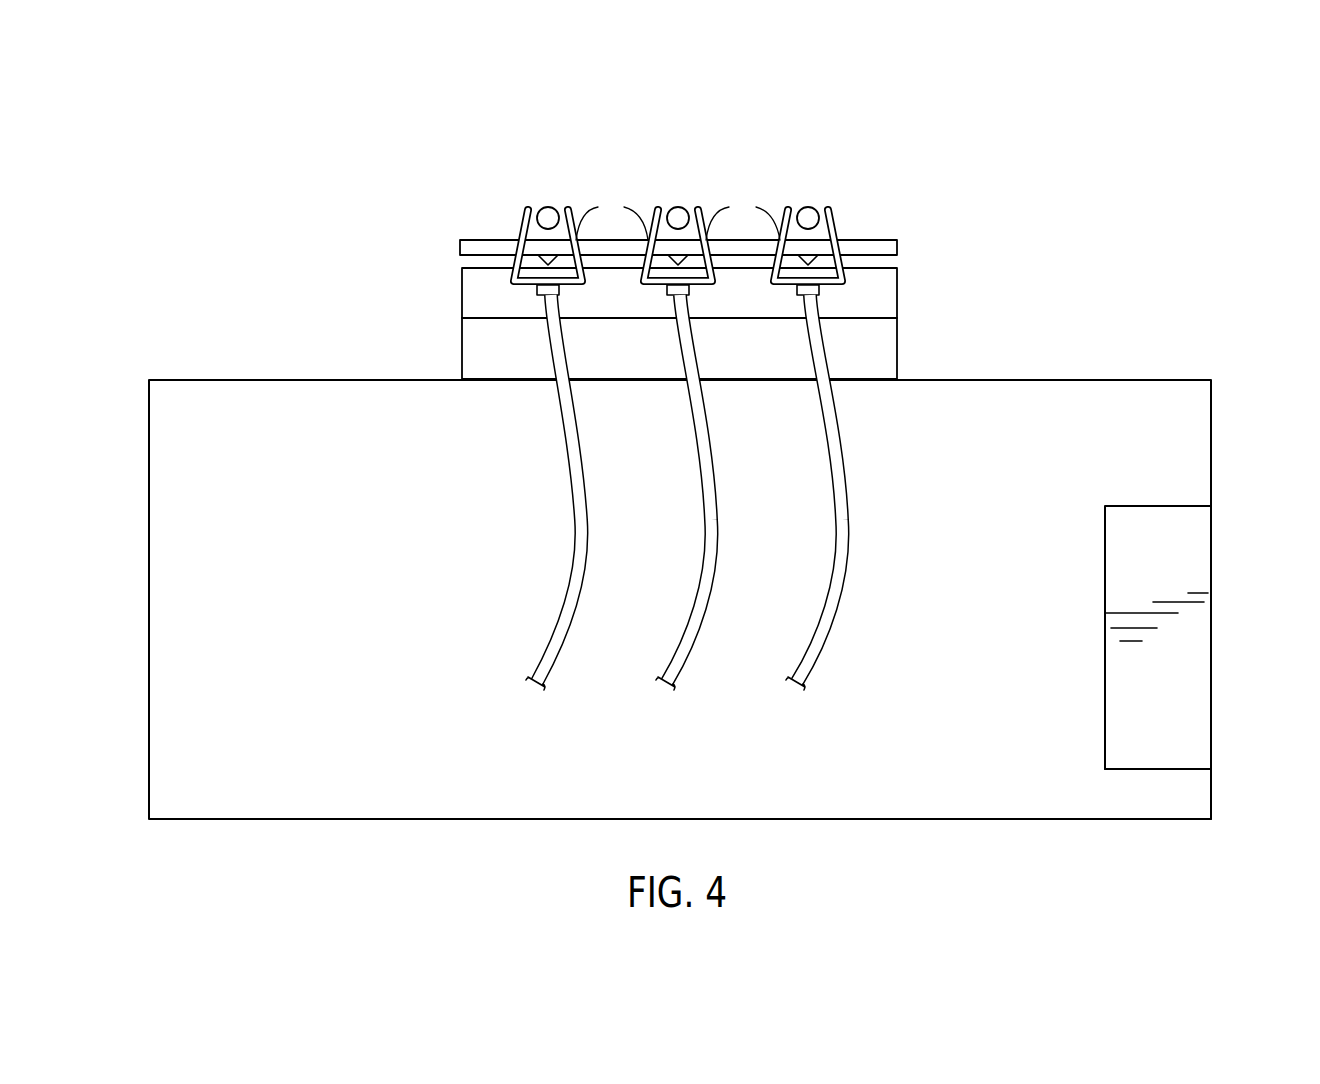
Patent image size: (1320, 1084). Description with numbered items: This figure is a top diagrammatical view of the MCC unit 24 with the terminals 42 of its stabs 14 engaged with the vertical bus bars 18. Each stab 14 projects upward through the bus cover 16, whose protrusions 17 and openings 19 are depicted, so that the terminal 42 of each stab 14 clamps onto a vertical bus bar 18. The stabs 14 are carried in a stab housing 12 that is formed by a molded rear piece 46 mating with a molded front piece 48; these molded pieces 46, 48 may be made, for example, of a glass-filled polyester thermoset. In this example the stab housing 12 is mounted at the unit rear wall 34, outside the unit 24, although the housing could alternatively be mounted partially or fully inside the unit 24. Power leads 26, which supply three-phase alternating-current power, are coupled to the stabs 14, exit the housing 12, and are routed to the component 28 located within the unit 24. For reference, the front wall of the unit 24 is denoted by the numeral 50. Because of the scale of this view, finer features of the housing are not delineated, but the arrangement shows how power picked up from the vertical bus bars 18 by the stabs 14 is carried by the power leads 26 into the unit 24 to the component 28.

The stab housing 12 is at (697, 323).
The stab 14 is at (703, 214).
The bus cover 16 is at (890, 240).
The protrusion 17 is at (546, 263).
The vertical bus bar 18 is at (547, 207).
The opening 19 is at (742, 287).
The MCC unit 24 is at (293, 195).
The power lead 26 is at (585, 487).
The component 28 is at (1190, 678).
The unit rear wall 34 is at (1117, 379).
The terminal 42 is at (497, 187).
The molded rear piece 46 is at (473, 282).
The molded front piece 48 is at (473, 345).
The front wall 50 is at (1132, 819).